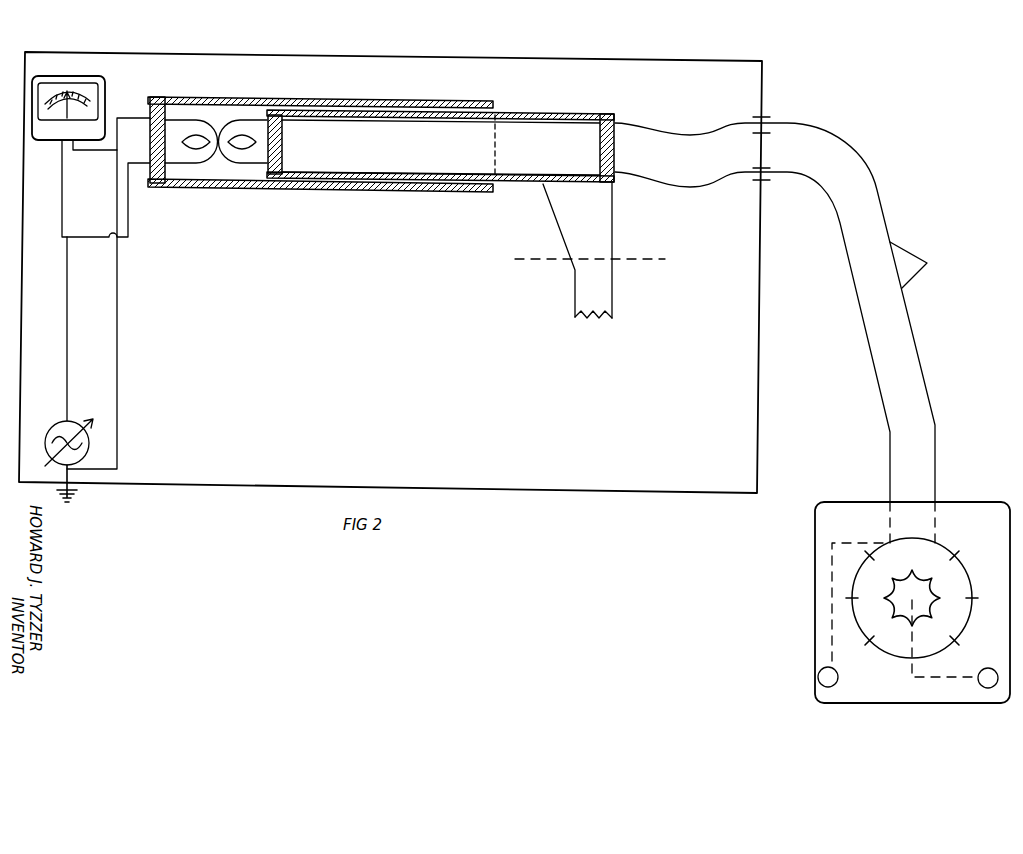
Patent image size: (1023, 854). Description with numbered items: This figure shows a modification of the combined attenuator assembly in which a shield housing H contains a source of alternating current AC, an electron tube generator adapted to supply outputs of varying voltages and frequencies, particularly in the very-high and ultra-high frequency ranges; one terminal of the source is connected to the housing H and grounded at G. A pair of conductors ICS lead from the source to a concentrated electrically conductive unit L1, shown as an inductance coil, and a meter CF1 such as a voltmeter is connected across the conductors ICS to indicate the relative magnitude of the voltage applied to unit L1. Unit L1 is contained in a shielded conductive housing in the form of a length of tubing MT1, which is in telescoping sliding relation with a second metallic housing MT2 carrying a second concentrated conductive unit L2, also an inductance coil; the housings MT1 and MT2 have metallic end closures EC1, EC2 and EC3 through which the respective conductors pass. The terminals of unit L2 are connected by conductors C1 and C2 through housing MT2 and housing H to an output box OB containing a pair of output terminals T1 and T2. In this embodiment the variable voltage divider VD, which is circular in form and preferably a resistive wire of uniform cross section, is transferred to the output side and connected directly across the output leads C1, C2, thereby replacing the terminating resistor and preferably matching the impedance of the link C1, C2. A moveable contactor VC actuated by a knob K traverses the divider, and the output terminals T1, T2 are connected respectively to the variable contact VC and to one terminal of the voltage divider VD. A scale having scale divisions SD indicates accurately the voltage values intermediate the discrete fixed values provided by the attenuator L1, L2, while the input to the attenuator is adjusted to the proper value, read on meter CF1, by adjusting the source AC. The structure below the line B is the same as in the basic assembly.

The shield housing H is at (344, 55).
The meter CF1 is at (72, 73).
The conductors ICS is at (119, 206).
The source of alternating current AC is at (45, 445).
The ground G is at (76, 504).
The metallic end closure EC1 is at (150, 108).
The metallic end closure EC2 is at (280, 156).
The metallic end closure EC3 is at (613, 172).
The length of tubing MT1 is at (265, 97).
The metallic housing MT2 is at (558, 108).
The concentrated electrically conductive unit L1 is at (188, 164).
The second concentrated electrically conductive unit L2 is at (230, 165).
The line B is at (619, 308).
The conductor C1 is at (858, 308).
The conductor C2 is at (927, 263).
The output box OB is at (815, 526).
The variable voltage divider VD is at (922, 588).
The knob K is at (903, 624).
The scale divisions SD is at (912, 660).
The moveable contactor VC is at (922, 587).
The output terminal T1 is at (988, 689).
The output terminal T2 is at (818, 681).